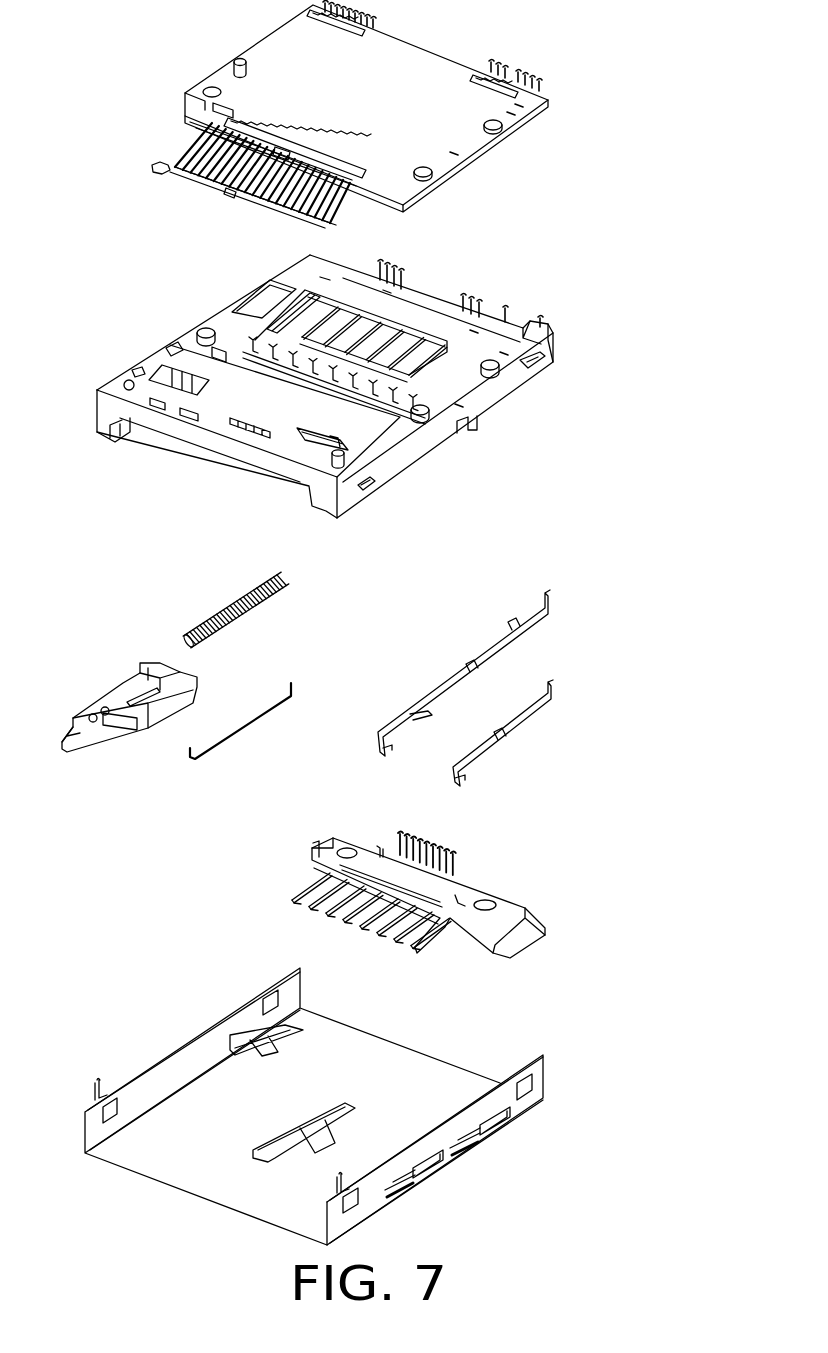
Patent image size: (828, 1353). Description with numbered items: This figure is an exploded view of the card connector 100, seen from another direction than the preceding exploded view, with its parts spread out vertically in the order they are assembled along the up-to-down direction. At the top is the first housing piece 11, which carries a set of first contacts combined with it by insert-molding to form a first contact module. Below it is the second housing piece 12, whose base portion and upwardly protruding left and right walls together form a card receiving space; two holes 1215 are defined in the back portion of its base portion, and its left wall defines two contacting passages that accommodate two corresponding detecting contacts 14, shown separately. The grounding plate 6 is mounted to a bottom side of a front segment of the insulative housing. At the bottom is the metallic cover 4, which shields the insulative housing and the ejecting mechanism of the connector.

The card connector 100 is at (593, 46).
The first housing piece 11 is at (438, 142).
The second housing piece 12 is at (355, 389).
The holes 1215 is at (353, 468).
The grounding plate 6 is at (239, 400).
The detecting contacts 14 is at (558, 577).
The metallic cover 4 is at (180, 1027).